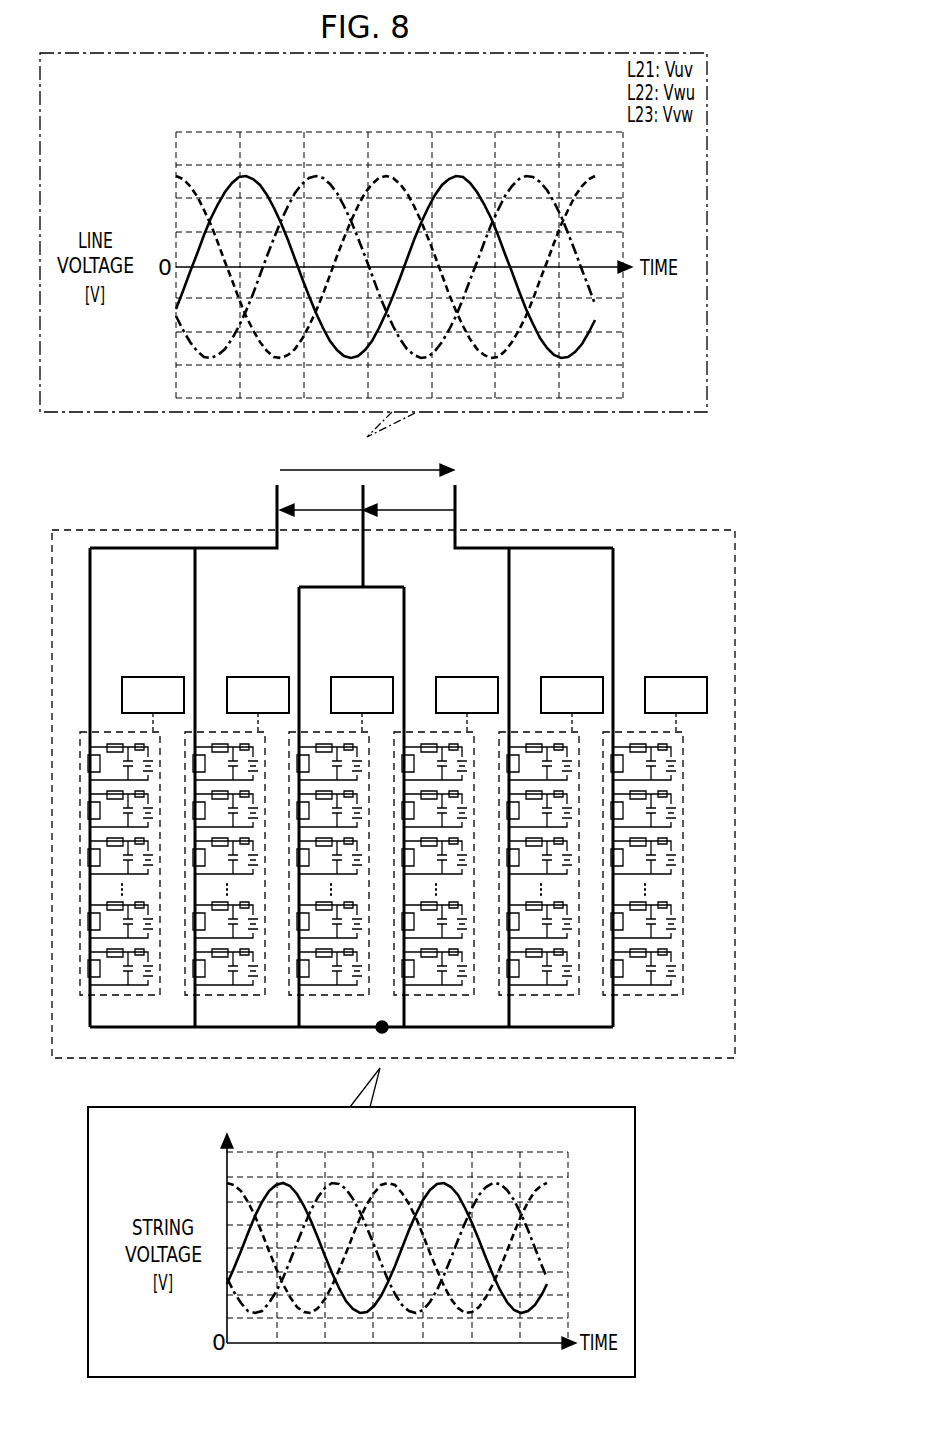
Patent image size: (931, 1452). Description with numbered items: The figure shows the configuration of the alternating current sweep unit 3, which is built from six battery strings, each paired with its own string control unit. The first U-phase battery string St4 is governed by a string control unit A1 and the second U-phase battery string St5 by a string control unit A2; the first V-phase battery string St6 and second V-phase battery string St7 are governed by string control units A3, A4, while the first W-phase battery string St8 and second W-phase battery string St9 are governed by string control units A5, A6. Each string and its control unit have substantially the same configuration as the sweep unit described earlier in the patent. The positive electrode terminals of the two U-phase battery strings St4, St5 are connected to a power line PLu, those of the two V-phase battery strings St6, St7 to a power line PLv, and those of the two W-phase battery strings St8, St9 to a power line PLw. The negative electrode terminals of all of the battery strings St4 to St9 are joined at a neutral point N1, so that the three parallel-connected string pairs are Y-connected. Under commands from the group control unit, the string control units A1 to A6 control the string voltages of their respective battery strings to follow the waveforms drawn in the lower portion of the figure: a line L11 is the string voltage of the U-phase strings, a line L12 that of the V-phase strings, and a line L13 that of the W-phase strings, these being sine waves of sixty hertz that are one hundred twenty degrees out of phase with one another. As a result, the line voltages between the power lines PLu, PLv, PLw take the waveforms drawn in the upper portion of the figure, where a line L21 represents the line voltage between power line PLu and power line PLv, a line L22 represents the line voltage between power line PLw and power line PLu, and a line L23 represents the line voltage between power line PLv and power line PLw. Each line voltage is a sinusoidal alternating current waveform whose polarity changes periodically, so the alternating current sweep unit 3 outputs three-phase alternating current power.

The alternating current sweep unit 3 is at (632, 518).
The power line PLu is at (205, 552).
The power line PLv is at (365, 545).
The power line PLw is at (500, 550).
The SCU A1 is at (142, 688).
The SCU A2 is at (247, 688).
The SCU A3 is at (351, 688).
The SCU A4 is at (456, 688).
The SCU A5 is at (561, 688).
The SCU A6 is at (665, 688).
The first U-phase battery string St4 is at (125, 880).
The second U-phase battery string St5 is at (230, 880).
The first V-phase battery string St6 is at (334, 880).
The second V-phase battery string St7 is at (439, 880).
The first W-phase battery string St8 is at (544, 880).
The second W-phase battery string St9 is at (648, 880).
The neutral point N1 is at (388, 1031).
The line L11 is at (283, 1182).
The line L12 is at (336, 1182).
The line L13 is at (388, 1182).
The line L21 is at (233, 174).
The line L22 is at (318, 174).
The line L23 is at (386, 174).